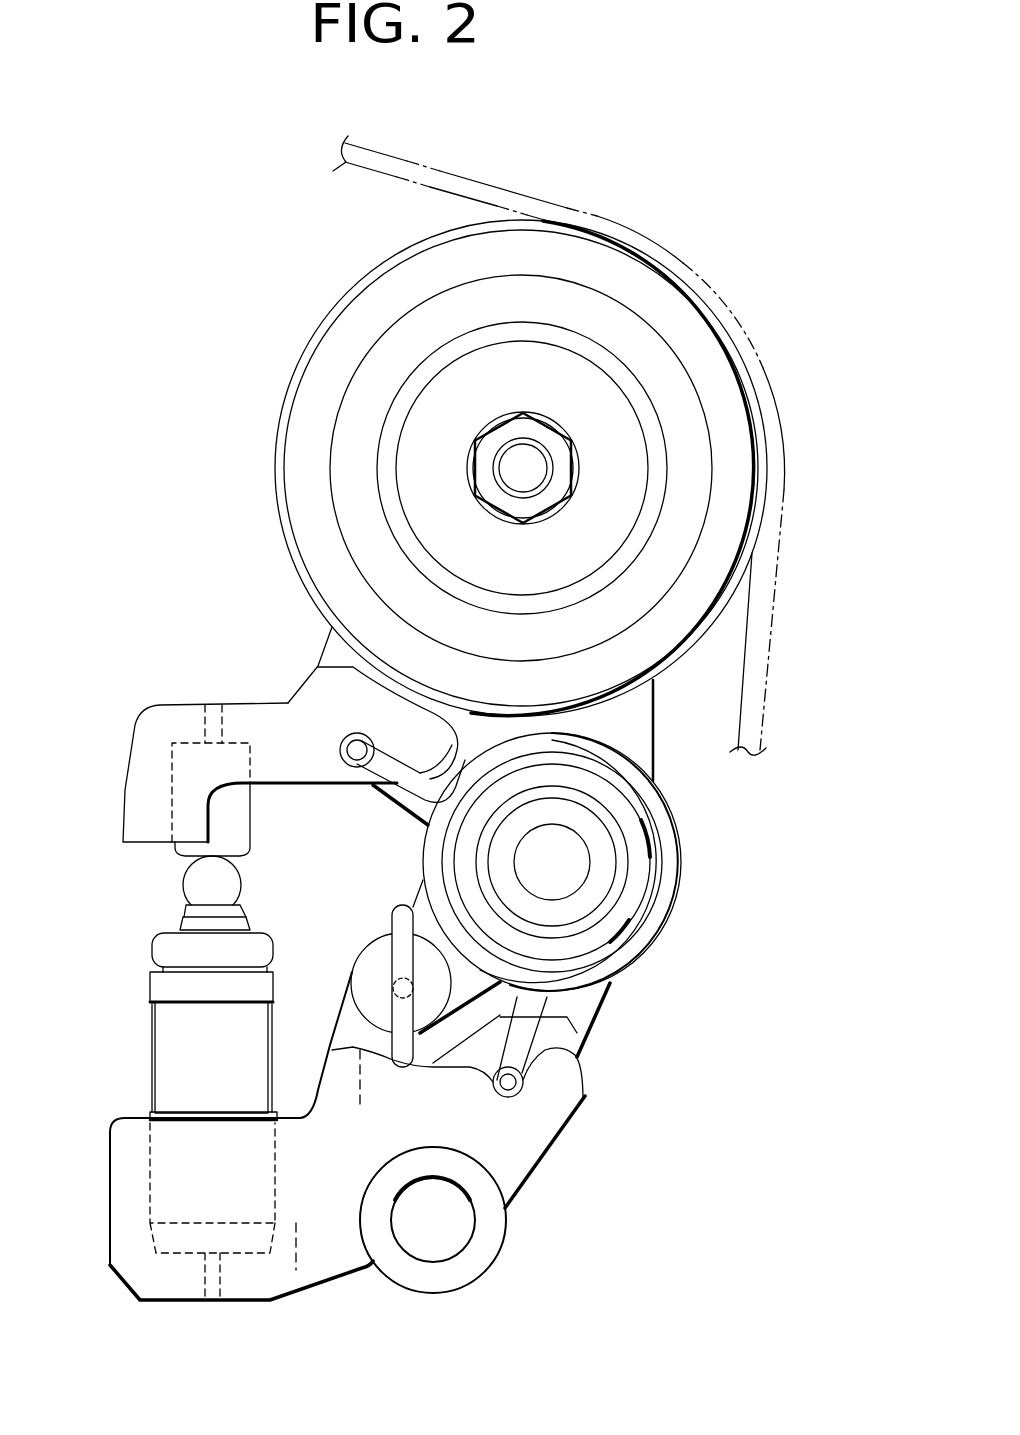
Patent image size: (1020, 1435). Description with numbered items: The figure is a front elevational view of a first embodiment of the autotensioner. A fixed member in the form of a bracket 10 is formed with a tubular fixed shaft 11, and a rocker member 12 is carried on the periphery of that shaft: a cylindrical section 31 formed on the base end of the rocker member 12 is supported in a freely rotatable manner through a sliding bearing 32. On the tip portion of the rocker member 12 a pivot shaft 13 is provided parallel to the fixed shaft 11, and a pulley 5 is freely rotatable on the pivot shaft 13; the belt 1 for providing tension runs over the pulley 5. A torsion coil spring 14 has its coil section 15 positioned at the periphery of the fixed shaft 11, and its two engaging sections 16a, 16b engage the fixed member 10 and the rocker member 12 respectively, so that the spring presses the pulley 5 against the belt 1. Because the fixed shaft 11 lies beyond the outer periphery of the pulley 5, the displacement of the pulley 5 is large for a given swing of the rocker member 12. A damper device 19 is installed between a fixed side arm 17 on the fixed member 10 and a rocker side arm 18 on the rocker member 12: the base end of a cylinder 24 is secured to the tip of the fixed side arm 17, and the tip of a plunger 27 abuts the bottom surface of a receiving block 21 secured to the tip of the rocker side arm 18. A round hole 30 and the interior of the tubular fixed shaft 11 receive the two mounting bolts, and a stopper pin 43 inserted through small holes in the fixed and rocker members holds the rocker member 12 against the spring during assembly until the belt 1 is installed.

The belt 1 is at (640, 238).
The pulley 5 is at (762, 432).
The bracket 10 is at (528, 1172).
The tubular fixed shaft 11 is at (613, 878).
The rocker member 12 is at (702, 762).
The pivot shaft 13 is at (527, 453).
The torsion coil spring 14 is at (647, 945).
The coil section 15 is at (613, 963).
The engaging section 16a is at (528, 1083).
The engaging section 16b is at (354, 760).
The fixed side arm 17 is at (333, 1272).
The rocker side arm 18 is at (127, 804).
The damper device 19 is at (163, 1038).
The receiving block 21 is at (180, 858).
The cylinder 24 is at (163, 1085).
The plunger 27 is at (240, 878).
The round hole 30 is at (443, 1250).
The cylindrical section 31 is at (640, 838).
The sliding bearing 32 is at (615, 892).
The stopper pin 43 is at (394, 910).